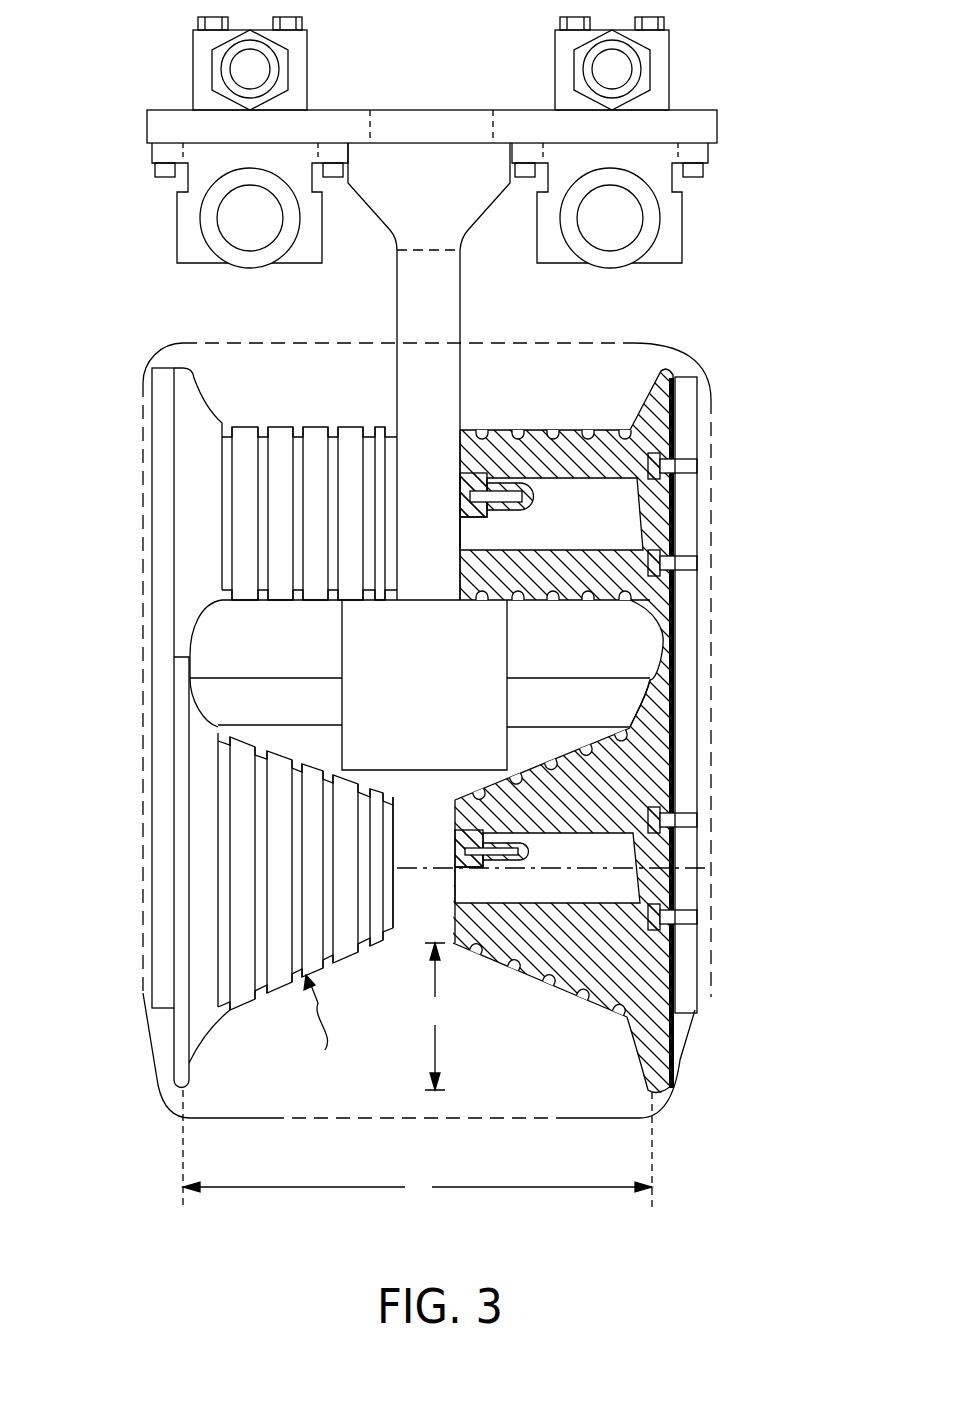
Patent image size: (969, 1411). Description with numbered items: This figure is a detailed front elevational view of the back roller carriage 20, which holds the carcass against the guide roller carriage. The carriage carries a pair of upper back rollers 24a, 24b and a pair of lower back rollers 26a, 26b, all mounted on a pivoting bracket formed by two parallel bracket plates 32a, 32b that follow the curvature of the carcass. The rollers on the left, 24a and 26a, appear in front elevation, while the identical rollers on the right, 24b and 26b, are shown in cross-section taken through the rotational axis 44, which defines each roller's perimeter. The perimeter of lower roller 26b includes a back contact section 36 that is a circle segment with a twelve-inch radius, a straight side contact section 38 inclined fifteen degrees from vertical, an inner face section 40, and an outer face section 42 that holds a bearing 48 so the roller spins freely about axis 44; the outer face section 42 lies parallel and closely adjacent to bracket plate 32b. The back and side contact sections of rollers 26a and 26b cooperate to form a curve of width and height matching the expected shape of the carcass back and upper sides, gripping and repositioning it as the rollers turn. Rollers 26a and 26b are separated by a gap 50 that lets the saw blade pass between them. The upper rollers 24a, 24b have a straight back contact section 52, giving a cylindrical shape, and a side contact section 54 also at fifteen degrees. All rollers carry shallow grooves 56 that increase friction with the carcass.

The back roller carriage 20 is at (441, 612).
The upper back roller 24a is at (185, 570).
The upper back roller 24b is at (680, 399).
The lower back roller 26a is at (167, 1035).
The lower back roller 26b is at (672, 684).
The bracket plate 32a is at (162, 776).
The bracket plate 32b is at (685, 693).
The back contact section 36 is at (457, 962).
The side contact section 38 is at (622, 1028).
The inner face section 40 is at (427, 942).
The outer face section 42 is at (683, 1042).
The rotational axis 44 is at (587, 874).
The bearing 48 is at (697, 838).
The gap 50 is at (408, 832).
The back contact section 52 is at (630, 423).
The side contact section 54 is at (661, 371).
The grooves 56 is at (554, 603).